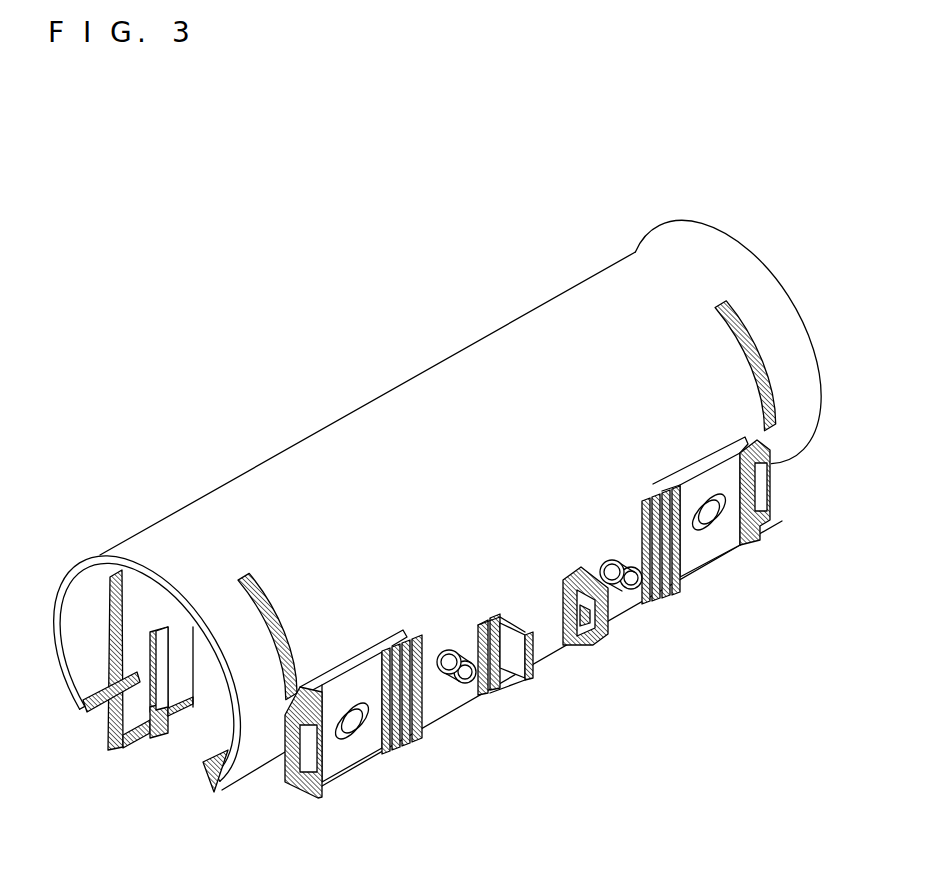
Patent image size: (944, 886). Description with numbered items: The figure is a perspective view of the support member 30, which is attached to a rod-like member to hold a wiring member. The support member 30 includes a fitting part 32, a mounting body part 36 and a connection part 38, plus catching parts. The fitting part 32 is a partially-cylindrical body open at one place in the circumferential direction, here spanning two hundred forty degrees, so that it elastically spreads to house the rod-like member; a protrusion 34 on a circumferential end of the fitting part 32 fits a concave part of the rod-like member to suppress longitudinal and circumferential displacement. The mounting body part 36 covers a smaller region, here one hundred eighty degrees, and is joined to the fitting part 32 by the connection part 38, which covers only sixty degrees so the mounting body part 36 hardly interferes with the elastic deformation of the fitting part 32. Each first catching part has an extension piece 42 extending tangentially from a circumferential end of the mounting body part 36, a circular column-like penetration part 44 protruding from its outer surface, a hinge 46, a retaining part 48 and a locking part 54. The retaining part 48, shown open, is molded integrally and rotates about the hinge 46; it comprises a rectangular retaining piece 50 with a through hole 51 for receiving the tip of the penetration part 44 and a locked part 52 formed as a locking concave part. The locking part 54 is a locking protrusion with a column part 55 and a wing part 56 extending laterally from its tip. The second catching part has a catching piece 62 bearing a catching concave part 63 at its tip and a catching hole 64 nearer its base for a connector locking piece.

The support member 30 is at (297, 226).
The fitting part 32 is at (780, 322).
The protrusion 34 is at (97, 713).
The mounting body part 36 is at (310, 452).
The connection part 38 is at (243, 578).
The extension piece 42 is at (552, 652).
The penetration part 44 is at (450, 676).
The hinge 46 is at (408, 753).
The retaining part 48 is at (542, 661).
The retaining piece 50 is at (353, 760).
The through hole 51 is at (340, 740).
The locked part 52 is at (397, 824).
The locking part 54 is at (543, 596).
The column part 55 is at (565, 610).
The wing part 56 is at (563, 613).
The catching piece 62 is at (120, 752).
The catching concave part 63 is at (162, 733).
The catching hole 64 is at (167, 680).